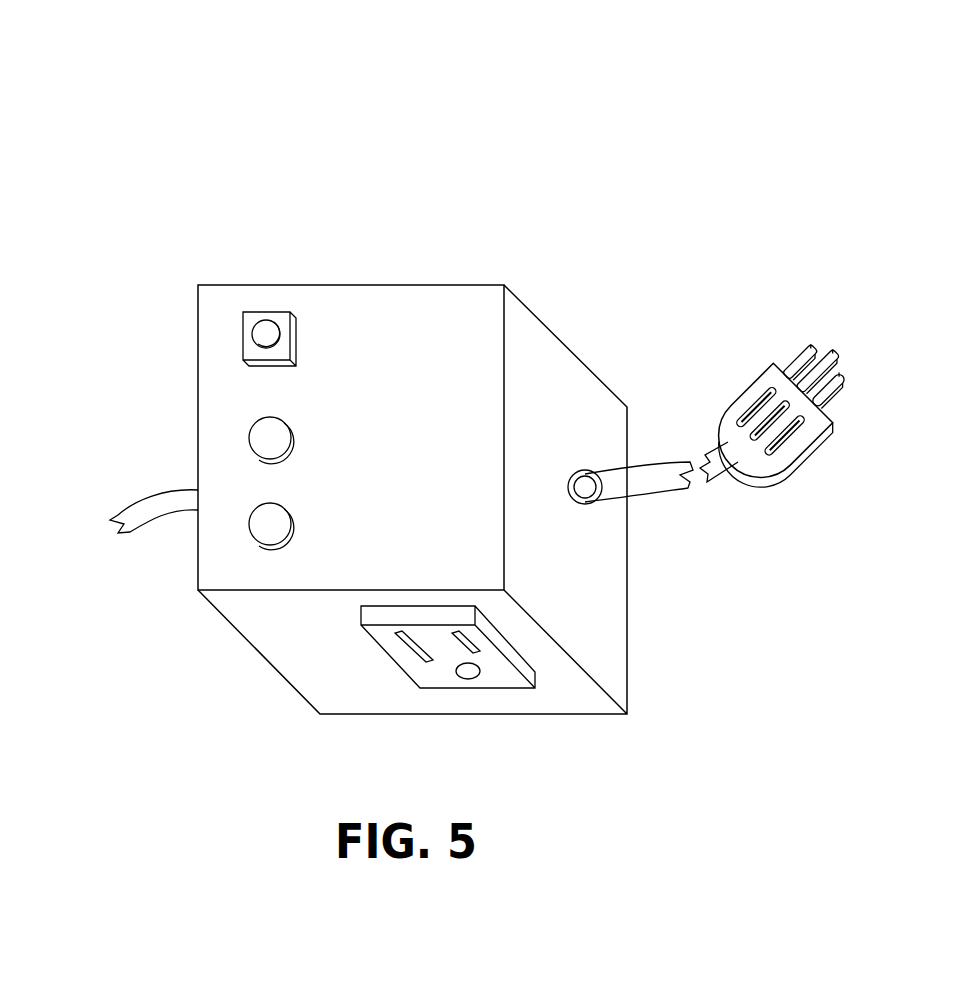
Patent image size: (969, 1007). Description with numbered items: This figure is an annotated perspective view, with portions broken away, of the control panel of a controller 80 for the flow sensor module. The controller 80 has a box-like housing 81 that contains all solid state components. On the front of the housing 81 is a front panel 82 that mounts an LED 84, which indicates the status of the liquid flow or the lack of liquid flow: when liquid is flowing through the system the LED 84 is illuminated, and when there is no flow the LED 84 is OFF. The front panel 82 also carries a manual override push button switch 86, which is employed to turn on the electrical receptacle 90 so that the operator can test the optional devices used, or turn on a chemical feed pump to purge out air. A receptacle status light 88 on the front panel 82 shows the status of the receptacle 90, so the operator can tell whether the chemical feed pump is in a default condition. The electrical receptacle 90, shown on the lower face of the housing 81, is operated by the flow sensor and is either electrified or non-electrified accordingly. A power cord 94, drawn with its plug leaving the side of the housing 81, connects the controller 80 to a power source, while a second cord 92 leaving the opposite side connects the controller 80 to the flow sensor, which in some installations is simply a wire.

The controller 80 is at (298, 176).
The housing 81 is at (542, 355).
The front panel 82 is at (483, 406).
The LED 84 is at (270, 524).
The manual override push button switch 86 is at (266, 333).
The receptacle status light 88 is at (270, 438).
The electrical receptacle 90 is at (535, 677).
The cord 92 is at (163, 512).
The power cord 94 is at (658, 480).